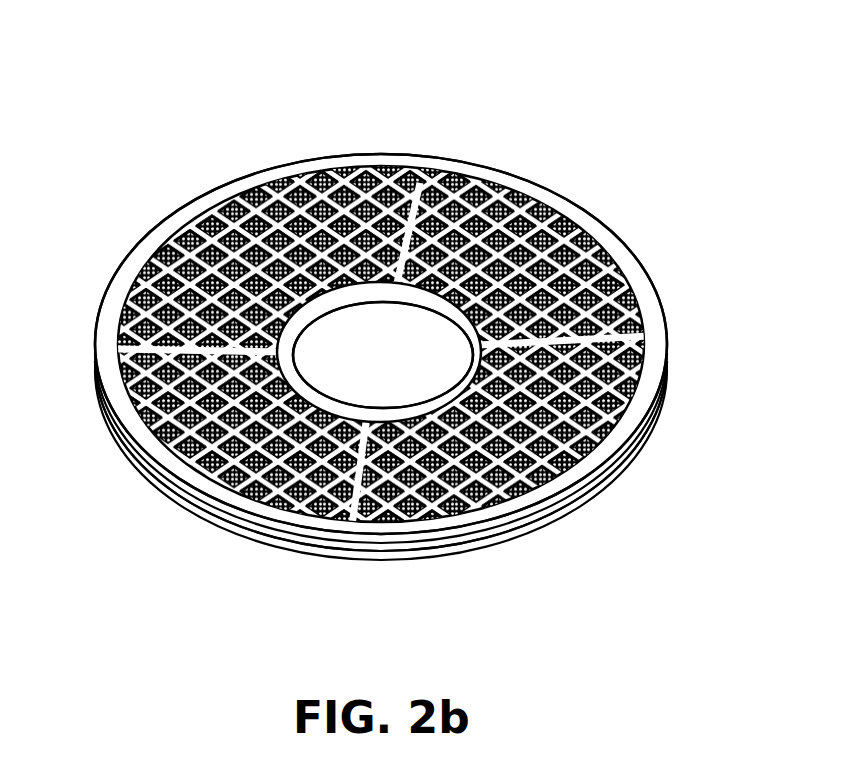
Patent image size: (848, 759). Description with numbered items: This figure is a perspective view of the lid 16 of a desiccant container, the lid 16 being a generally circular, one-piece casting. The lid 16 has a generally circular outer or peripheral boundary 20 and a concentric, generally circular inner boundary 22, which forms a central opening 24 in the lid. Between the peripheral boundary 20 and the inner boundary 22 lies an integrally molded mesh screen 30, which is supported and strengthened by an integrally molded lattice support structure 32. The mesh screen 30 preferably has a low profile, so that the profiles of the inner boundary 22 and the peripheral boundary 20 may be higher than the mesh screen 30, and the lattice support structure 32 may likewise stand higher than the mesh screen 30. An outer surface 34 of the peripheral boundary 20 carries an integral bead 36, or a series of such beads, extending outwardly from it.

The lid 16 is at (130, 58).
The peripheral boundary 20 is at (196, 215).
The inner boundary 22 is at (340, 290).
The opening 24 is at (397, 348).
The mesh screen 30 is at (197, 410).
The lattice support structure 32 is at (582, 380).
The outer surface 34 is at (368, 548).
The bead 36 is at (347, 550).